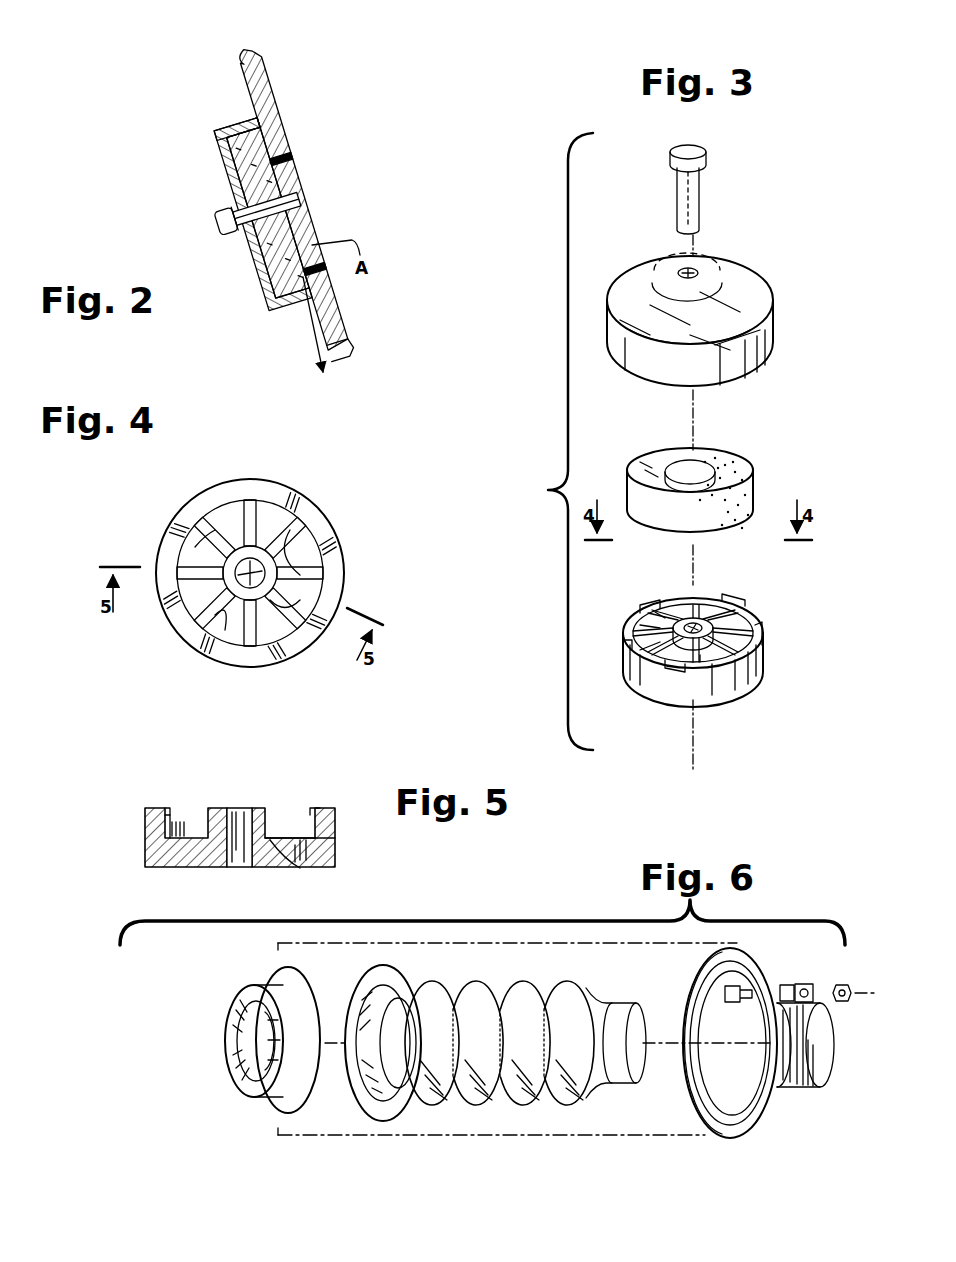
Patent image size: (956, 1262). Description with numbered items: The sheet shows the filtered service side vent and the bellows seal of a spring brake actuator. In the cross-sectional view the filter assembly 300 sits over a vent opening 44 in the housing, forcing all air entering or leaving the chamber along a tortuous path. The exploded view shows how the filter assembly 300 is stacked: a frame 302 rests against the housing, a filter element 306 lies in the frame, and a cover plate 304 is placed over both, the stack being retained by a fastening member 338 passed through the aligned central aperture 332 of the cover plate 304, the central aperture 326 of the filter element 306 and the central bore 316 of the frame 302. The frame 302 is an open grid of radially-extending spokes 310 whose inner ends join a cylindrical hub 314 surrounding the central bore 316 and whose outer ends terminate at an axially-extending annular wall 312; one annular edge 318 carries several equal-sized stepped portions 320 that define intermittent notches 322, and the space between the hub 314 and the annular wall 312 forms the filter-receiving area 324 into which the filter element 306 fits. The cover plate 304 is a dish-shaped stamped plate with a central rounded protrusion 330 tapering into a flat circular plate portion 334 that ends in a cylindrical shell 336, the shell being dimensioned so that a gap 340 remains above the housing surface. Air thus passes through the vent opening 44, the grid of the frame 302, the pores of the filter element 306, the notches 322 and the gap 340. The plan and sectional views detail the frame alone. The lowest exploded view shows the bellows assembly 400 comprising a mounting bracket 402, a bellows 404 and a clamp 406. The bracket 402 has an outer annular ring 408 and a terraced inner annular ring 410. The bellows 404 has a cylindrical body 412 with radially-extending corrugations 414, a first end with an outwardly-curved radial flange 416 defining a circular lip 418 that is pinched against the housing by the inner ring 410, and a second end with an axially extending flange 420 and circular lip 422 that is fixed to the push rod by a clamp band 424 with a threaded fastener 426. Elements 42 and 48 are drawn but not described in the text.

In FIG. 2, the filter assembly 300 is at (172, 68).
In FIG. 3, the filter assembly 300 is at (549, 441).
In FIG. 2, the frame 302 is at (259, 132).
In FIG. 3, the frame 302 is at (782, 648).
In FIG. 4, the frame 302 is at (309, 463).
In FIG. 5, the frame 302 is at (135, 835).
In FIG. 2, the cover plate 304 is at (209, 165).
In FIG. 3, the cover plate 304 is at (778, 365).
In FIG. 2, the filter element 306 is at (271, 170).
In FIG. 3, the filter element 306 is at (650, 448).
In FIG. 3, the radially-extending spokes 310 is at (640, 640).
In FIG. 4, the radially-extending spokes 310 is at (262, 512).
In FIG. 5, the radially-extending spokes 310 is at (290, 835).
In FIG. 3, the annular wall 312 is at (765, 668).
In FIG. 4, the annular wall 312 is at (332, 531).
In FIG. 5, the annular wall 312 is at (336, 838).
In FIG. 3, the cylindrical hub 314 is at (690, 645).
In FIG. 4, the cylindrical hub 314 is at (235, 578).
In FIG. 5, the cylindrical hub 314 is at (272, 836).
In FIG. 3, the central bore 316 is at (700, 628).
In FIG. 4, the central bore 316 is at (246, 558).
In FIG. 5, the central bore 316 is at (238, 812).
In FIG. 3, the annular edge 318 is at (712, 670).
In FIG. 5, the annular edge 318 is at (166, 805).
In FIG. 3, the stepped portions 320 is at (705, 598).
In FIG. 4, the stepped portions 320 is at (252, 488).
In FIG. 5, the stepped portions 320 is at (150, 806).
In FIG. 3, the notches 322 is at (655, 605).
In FIG. 4, the notches 322 is at (306, 515).
In FIG. 5, the notches 322 is at (185, 826).
In FIG. 3, the filter-receiving area 324 is at (660, 612).
In FIG. 3, the central aperture 326 is at (712, 480).
In FIG. 2, the central rounded protrusion 330 is at (236, 241).
In FIG. 3, the central rounded protrusion 330 is at (700, 279).
In FIG. 3, the central aperture 332 is at (702, 271).
In FIG. 3, the flat circular plate portion 334 is at (752, 310).
In FIG. 2, the cylindrical shell 336 is at (214, 128).
In FIG. 3, the cylindrical shell 336 is at (777, 340).
In FIG. 2, the fastening member 338 is at (267, 213).
In FIG. 3, the fastening member 338 is at (702, 190).
In FIG. 2, the gap 340 is at (243, 125).
In FIG. 2, the vent openings 44 is at (276, 158).
In FIG. 6, the bellows assembly 400 is at (318, 1143).
In FIG. 6, the mounting bracket 402 is at (762, 1119).
In FIG. 6, the bellows 404 is at (438, 983).
In FIG. 6, the clamp 406 is at (829, 1082).
In FIG. 6, the outer annular ring 408 is at (706, 1121).
In FIG. 6, the inner annular ring 410 is at (697, 1068).
In FIG. 6, the cylindrical body 412 is at (512, 1085).
In FIG. 6, the corrugations 414 is at (463, 990).
In FIG. 6, the radial flange 416 is at (408, 987).
In FIG. 6, the circular lip 418 is at (375, 978).
In FIG. 6, the axially extending flange 420 is at (619, 1010).
In FIG. 6, the circular lip 422 is at (637, 1012).
In FIG. 6, the clamp band 424 is at (806, 984).
In FIG. 6, the threaded fastener 426 is at (845, 985).
In FIG. 6, the sleeve 42 is at (223, 1005).
In FIG. 6, the sleeve flange 48 is at (275, 980).